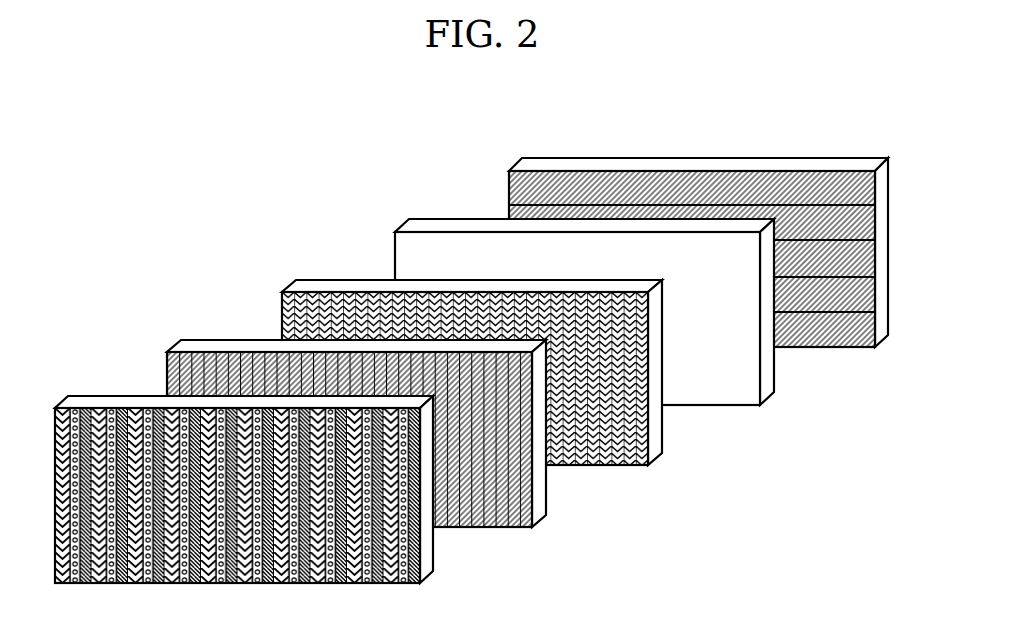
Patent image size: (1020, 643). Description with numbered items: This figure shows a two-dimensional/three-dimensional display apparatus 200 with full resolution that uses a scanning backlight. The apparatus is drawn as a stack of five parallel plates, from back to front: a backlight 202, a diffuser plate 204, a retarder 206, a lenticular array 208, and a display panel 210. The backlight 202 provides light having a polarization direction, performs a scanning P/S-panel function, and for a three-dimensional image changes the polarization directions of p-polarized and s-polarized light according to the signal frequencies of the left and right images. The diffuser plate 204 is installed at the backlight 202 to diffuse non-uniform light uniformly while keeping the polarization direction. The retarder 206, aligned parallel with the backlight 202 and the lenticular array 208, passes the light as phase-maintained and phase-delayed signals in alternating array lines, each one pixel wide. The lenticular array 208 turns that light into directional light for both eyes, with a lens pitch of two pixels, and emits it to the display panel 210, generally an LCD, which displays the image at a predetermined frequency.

The 2D/3D display apparatus 200 is at (203, 211).
The backlight 202 is at (827, 348).
The diffuser plate 204 is at (712, 406).
The retarder 206 is at (597, 466).
The lenticular array 208 is at (487, 529).
The display panel 210 is at (372, 585).